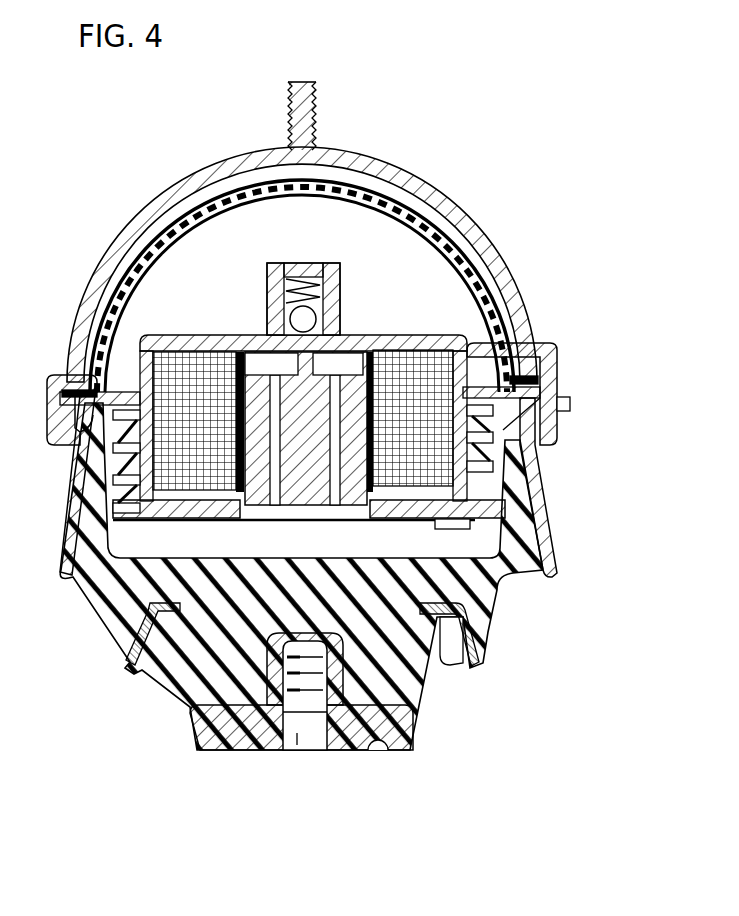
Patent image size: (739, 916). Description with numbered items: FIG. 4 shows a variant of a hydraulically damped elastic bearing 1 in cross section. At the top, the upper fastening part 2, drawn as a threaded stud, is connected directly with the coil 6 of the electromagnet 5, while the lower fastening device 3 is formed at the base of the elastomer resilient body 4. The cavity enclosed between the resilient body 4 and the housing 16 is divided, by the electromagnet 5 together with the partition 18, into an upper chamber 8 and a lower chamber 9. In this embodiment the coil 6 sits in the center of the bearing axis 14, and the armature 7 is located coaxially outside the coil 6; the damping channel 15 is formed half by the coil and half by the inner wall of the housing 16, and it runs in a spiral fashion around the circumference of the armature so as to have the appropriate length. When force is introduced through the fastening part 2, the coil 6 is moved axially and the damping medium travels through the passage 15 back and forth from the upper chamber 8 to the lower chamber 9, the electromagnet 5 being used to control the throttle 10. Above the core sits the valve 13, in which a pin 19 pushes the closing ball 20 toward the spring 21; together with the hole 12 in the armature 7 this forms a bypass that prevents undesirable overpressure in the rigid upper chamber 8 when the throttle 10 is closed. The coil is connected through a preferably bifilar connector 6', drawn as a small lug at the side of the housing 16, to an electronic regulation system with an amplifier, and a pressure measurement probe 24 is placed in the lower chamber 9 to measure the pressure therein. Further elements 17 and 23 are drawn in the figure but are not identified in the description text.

The elastic bearing 1 is at (456, 135).
The upper fastening part 2 is at (297, 72).
The lower fastening device 3 is at (312, 758).
The elastomer resilient body 4 is at (165, 688).
The electromagnet 5 is at (421, 340).
The coil 6 is at (309, 362).
The bifilar connector 6' is at (577, 420).
The armature 7 is at (470, 385).
The upper chamber 8 is at (205, 230).
The lower chamber 9 is at (130, 553).
The throttle 10 is at (335, 352).
The hole 12 is at (237, 393).
The valve 13 is at (330, 265).
The bearing axis 14 is at (382, 503).
The damping channel 15 is at (118, 447).
The housing 16 is at (556, 392).
The membrane 17 is at (257, 183).
The partition 18 is at (56, 420).
The pin 19 is at (266, 337).
The closing ball 20 is at (345, 320).
The spring 21 is at (306, 262).
The pole piece 23 is at (272, 393).
The pressure measurement probe 24 is at (470, 522).